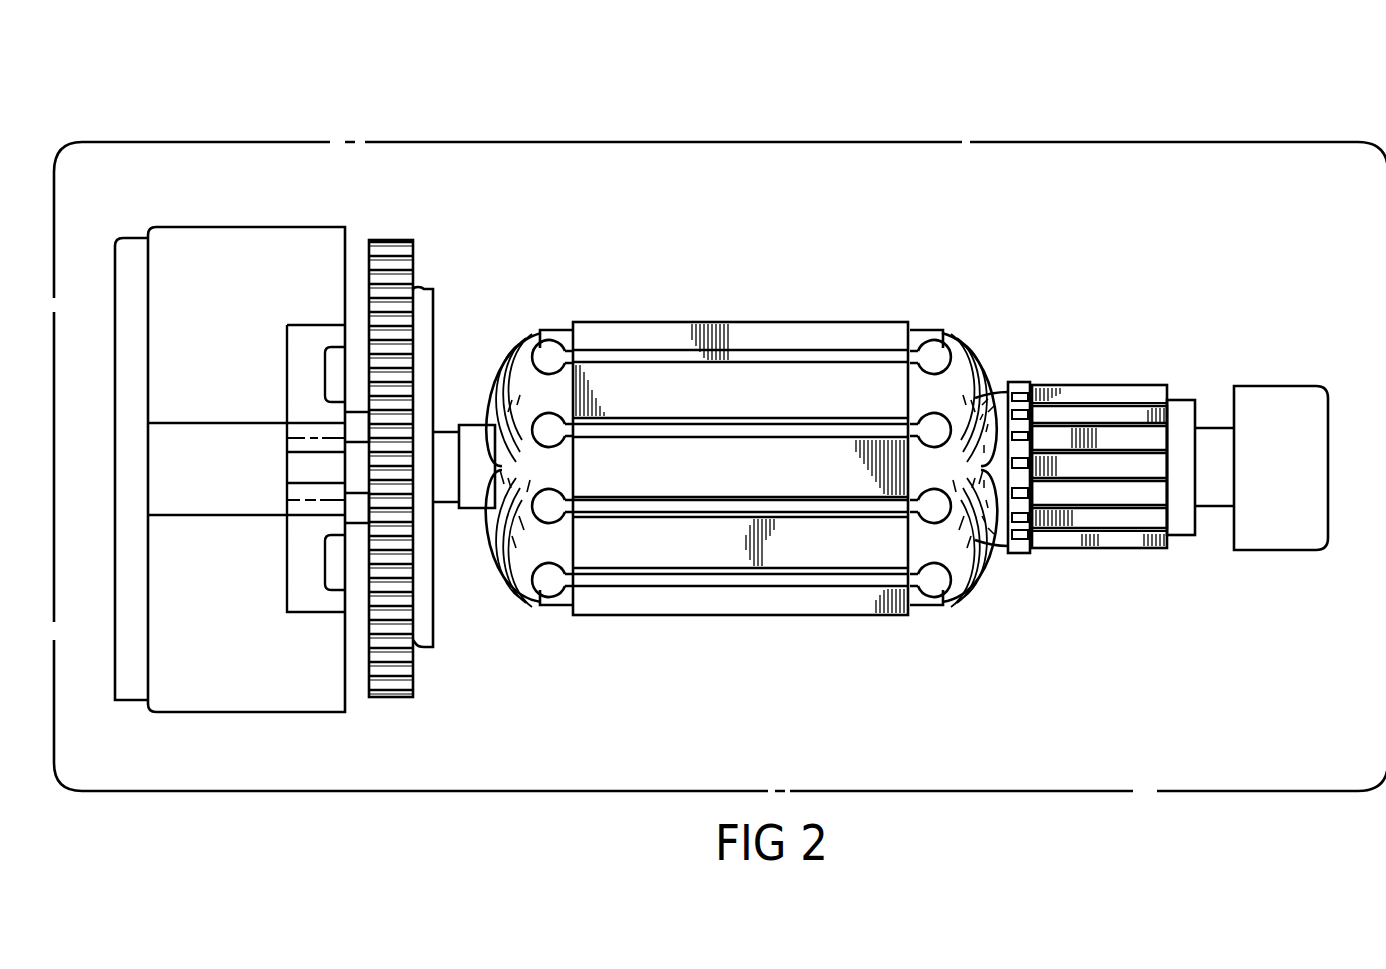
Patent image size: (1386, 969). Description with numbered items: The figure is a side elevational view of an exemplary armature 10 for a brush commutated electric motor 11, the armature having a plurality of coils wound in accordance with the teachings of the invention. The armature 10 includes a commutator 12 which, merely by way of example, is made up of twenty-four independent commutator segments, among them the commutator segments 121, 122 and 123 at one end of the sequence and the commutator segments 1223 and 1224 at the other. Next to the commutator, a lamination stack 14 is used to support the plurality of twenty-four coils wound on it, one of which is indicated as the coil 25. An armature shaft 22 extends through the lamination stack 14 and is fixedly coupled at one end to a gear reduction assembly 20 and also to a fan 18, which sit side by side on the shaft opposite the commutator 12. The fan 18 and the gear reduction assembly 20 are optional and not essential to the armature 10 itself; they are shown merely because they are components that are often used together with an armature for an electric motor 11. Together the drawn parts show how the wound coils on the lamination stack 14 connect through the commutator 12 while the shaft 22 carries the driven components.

The brush commutated electric motor 11 is at (934, 126).
The armature 10 is at (732, 454).
The commutator 12 is at (1066, 371).
The commutator segment 121 is at (1150, 468).
The commutator segment 122 is at (1138, 438).
The commutator segment 123 is at (1115, 400).
The commutator segment 1223 is at (1083, 520).
The commutator segment 1224 is at (1103, 495).
The lamination stack 14 is at (849, 380).
The fan 18 is at (392, 240).
The gear reduction assembly 20 is at (280, 713).
The armature shaft 22 is at (443, 442).
The coil 25 is at (516, 609).